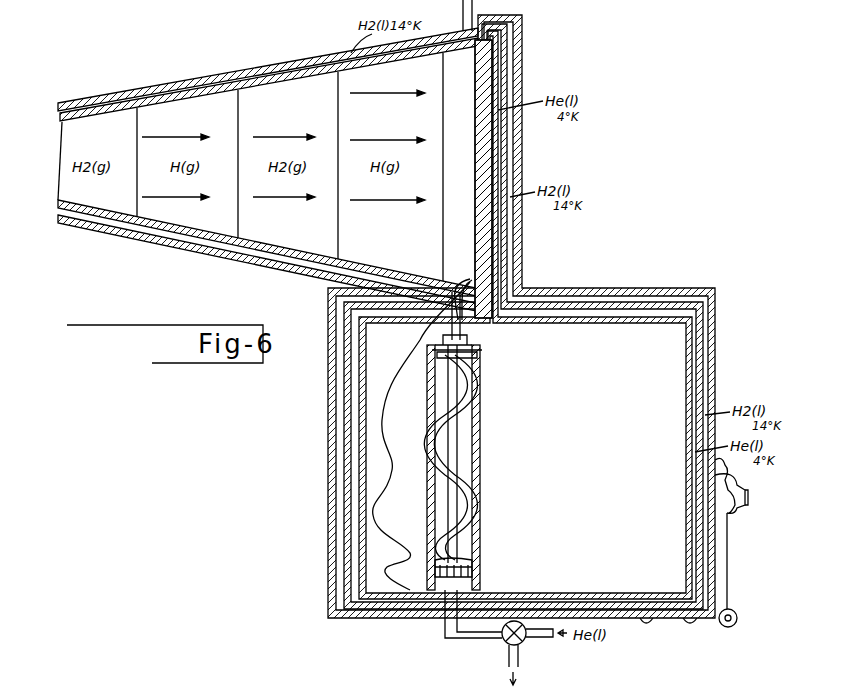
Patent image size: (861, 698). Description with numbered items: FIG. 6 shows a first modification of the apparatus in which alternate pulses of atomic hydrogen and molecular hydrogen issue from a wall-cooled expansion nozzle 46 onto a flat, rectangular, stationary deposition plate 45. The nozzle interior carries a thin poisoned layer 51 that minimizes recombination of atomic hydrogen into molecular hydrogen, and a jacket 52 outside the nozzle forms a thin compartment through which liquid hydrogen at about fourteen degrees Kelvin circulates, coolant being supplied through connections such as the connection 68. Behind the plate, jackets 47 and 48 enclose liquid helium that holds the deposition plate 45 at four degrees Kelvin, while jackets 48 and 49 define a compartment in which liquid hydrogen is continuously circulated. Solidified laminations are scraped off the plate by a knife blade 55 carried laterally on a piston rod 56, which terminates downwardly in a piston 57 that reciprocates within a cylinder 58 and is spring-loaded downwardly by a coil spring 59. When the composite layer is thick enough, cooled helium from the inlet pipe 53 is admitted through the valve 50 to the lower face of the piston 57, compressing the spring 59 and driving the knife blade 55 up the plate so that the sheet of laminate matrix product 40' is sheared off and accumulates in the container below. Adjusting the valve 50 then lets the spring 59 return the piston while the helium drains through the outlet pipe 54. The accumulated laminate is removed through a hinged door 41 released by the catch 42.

The laminate matrix product 40' is at (421, 436).
The door 41 is at (728, 578).
The catch 42 is at (745, 512).
The deposition plate 45 is at (475, 129).
The expansion nozzle 46 is at (60, 117).
The jacket 47 is at (494, 50).
The jacket 48 is at (508, 61).
The jacket 49 is at (523, 77).
The valve 50 is at (502, 640).
The layer 51 is at (80, 122).
The jacket 52 is at (80, 90).
The inlet pipe 53 is at (540, 640).
The outlet pipe 54 is at (507, 662).
The knife blade 55 is at (458, 280).
The piston rod 56 is at (463, 327).
The piston 57 is at (473, 570).
The cylinder 58 is at (482, 418).
The coil spring 59 is at (469, 480).
The connection 68 is at (474, 8).